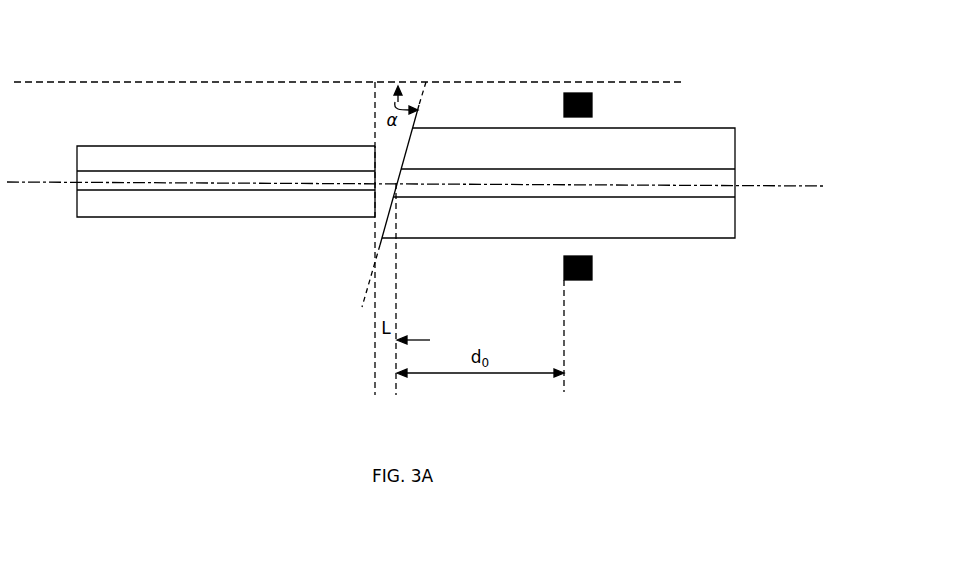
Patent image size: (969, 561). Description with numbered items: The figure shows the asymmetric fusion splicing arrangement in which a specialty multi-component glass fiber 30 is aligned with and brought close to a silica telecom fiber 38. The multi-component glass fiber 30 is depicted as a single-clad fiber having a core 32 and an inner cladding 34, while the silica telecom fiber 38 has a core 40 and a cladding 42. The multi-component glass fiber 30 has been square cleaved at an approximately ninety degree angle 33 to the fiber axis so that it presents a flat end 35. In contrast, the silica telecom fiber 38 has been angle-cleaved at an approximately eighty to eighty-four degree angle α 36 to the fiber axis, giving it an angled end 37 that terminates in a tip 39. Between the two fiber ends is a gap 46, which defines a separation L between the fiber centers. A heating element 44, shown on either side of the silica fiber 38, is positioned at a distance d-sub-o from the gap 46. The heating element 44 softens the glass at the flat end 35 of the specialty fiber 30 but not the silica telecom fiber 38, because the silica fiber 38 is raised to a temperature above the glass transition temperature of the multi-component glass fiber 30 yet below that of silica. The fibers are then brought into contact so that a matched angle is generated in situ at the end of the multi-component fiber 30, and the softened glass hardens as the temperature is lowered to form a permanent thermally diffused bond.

The multi-component glass fiber 30 is at (160, 146).
The core 32 is at (140, 182).
The angle 33 is at (353, 97).
The inner cladding 34 is at (253, 203).
The flat end 35 is at (375, 218).
The angle α 36 is at (412, 100).
The angled end 37 is at (408, 145).
The silica telecom fiber 38 is at (510, 128).
The tip 39 is at (388, 217).
The core 40 is at (445, 185).
The cladding 42 is at (623, 221).
The heating element 44 is at (592, 101).
The gap 46 is at (366, 340).